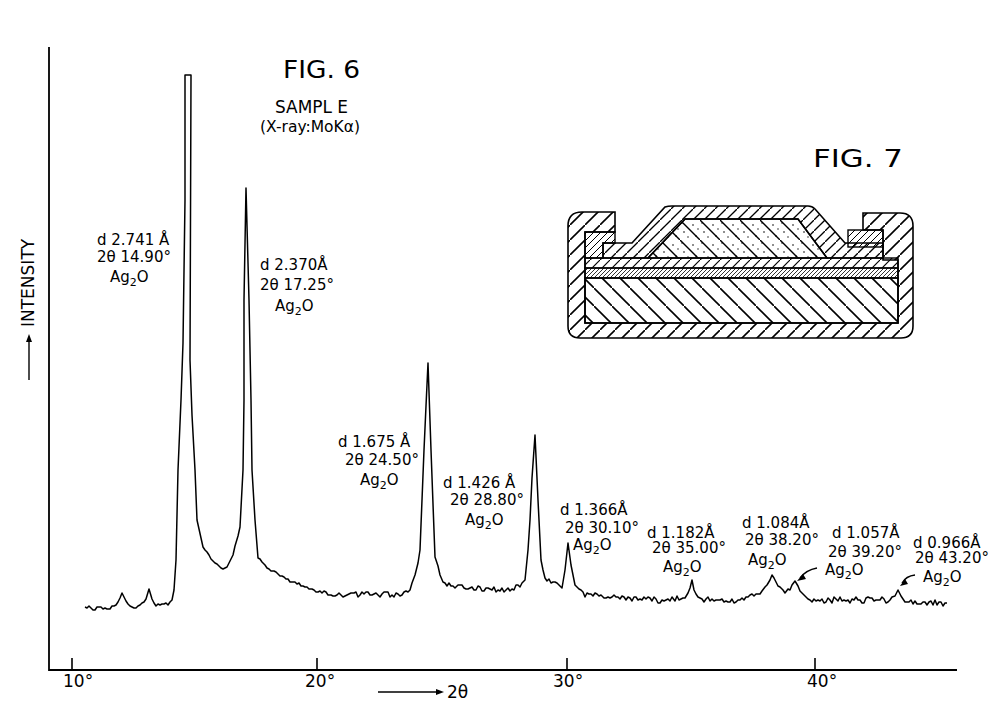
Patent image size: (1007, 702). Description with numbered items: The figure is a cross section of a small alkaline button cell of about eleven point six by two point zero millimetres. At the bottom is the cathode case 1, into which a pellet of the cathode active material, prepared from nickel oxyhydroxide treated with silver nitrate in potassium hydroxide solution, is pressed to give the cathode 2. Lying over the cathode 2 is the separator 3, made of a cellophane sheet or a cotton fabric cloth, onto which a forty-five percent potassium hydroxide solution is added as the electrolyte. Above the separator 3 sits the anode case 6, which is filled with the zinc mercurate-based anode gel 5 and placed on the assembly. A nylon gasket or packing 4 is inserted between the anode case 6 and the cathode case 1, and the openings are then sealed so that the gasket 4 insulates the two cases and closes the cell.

The cathode case 1 is at (656, 328).
The cathode 2 is at (806, 307).
The separator 3 is at (893, 273).
The nylon gasket or packing 4 is at (632, 231).
The zinc mercurate-based anode gel 5 is at (731, 237).
The anode case 6 is at (770, 212).